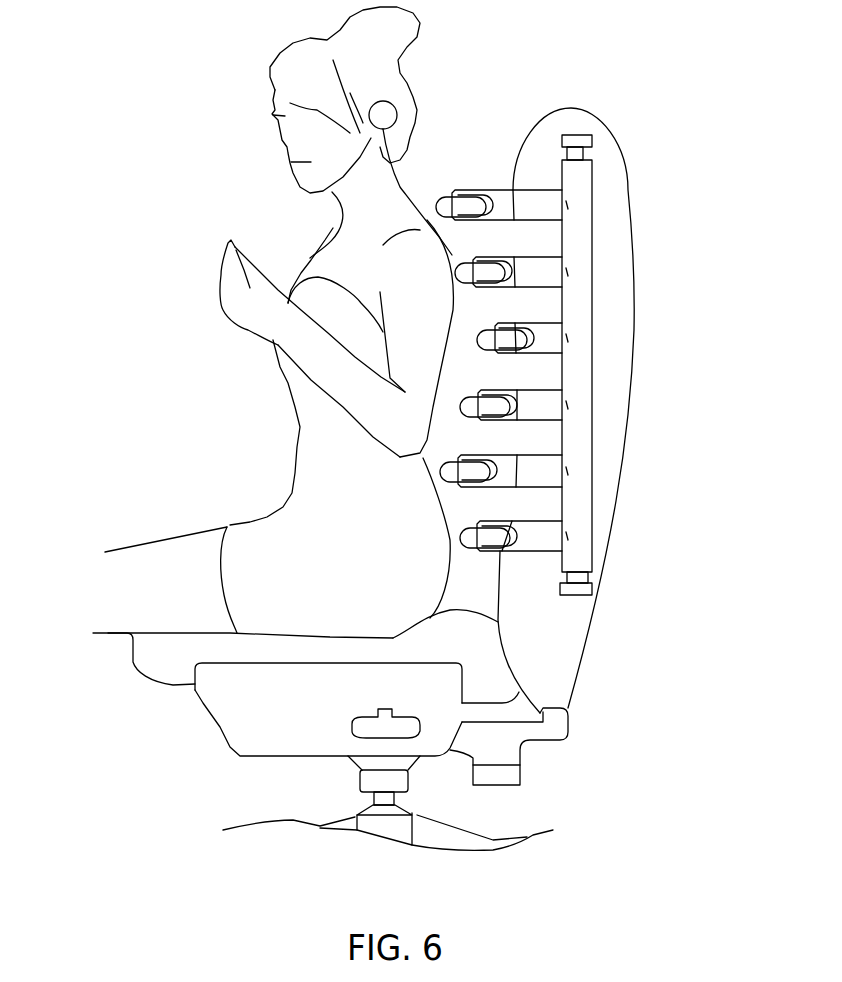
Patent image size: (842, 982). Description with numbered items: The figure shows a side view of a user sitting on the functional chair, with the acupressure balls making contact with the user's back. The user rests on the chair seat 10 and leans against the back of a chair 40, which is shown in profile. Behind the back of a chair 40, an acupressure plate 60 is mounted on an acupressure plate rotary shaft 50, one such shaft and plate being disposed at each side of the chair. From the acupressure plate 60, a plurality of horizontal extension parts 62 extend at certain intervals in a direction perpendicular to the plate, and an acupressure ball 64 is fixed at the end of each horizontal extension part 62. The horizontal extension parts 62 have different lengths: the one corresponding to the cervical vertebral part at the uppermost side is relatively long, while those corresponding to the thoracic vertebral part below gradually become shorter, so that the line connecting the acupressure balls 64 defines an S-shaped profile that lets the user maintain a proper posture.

The chair seat 10 is at (155, 663).
The back of a chair 40 is at (577, 110).
The acupressure plate rotary shaft 50 is at (590, 153).
The acupressure plate 60 is at (585, 312).
The horizontal extension part 62 is at (499, 192).
The acupressure ball 64 is at (438, 197).